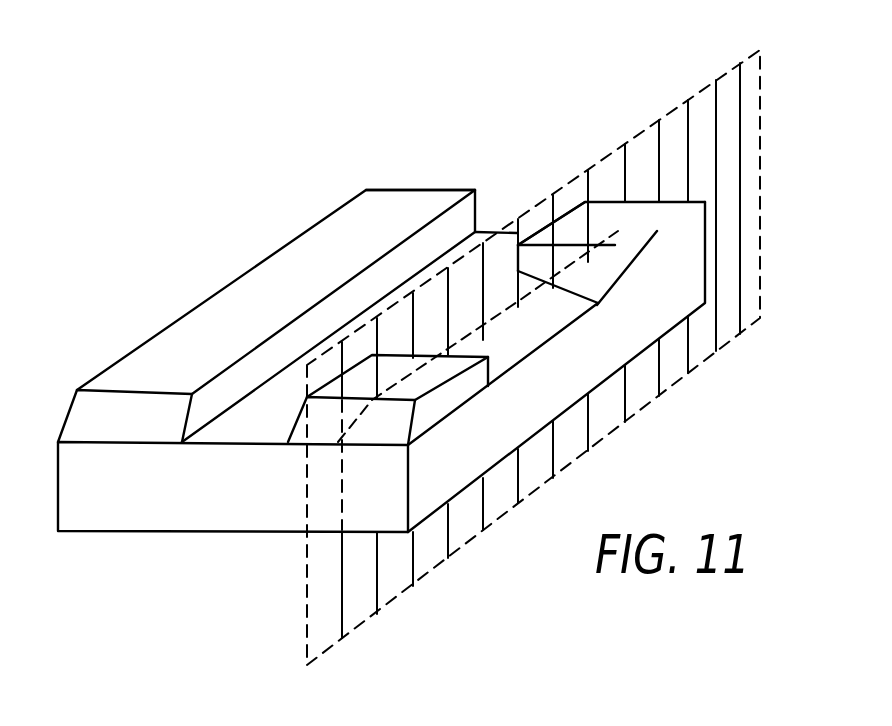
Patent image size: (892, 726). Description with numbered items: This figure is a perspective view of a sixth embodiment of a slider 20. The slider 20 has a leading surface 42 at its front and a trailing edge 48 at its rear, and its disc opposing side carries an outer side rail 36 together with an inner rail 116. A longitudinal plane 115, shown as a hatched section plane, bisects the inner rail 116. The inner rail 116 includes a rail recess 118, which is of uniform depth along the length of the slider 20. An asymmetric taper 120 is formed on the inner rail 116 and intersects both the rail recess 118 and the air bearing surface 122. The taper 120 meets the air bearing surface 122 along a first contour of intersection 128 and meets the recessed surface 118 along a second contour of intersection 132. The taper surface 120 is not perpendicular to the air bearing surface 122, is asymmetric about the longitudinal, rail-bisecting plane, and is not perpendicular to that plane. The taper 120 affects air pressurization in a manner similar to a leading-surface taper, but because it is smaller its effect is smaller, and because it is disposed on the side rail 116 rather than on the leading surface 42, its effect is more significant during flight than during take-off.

The slider 20 is at (416, 150).
The outer side rail 36 is at (252, 280).
The leading surface 42 is at (158, 505).
The trailing edge 48 is at (412, 190).
The longitudinal plane 115 is at (752, 93).
The inner rail 116 is at (318, 413).
The rail recess 118 is at (523, 340).
The asymmetric taper 120 is at (603, 263).
The air bearing surface 122 is at (627, 220).
The intersection 128 is at (610, 245).
The intersection 132 is at (573, 298).